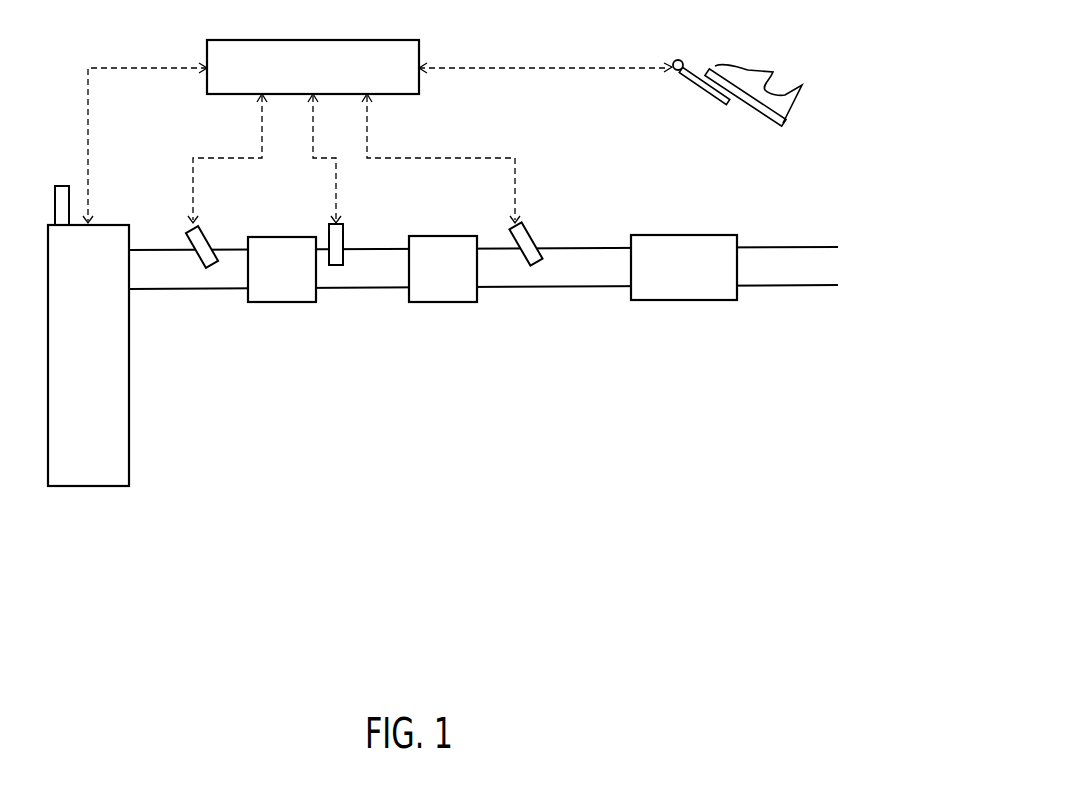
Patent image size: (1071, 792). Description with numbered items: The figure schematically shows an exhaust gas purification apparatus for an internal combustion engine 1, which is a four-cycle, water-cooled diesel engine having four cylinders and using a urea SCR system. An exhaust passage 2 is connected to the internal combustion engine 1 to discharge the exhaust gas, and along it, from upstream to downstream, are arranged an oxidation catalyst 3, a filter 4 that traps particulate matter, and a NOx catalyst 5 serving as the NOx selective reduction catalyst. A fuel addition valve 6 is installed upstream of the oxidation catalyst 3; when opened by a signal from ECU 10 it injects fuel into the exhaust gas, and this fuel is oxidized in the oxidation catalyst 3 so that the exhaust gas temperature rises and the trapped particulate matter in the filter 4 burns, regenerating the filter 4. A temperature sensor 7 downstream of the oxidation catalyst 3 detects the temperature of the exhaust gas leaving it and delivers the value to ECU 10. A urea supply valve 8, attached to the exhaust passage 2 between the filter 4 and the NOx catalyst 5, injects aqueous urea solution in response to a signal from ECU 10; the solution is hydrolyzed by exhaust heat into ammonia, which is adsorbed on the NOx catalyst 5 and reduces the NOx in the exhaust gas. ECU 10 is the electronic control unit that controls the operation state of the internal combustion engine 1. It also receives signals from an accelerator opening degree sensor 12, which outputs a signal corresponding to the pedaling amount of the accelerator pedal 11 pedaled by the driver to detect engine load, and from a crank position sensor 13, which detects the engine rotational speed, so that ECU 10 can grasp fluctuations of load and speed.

The internal combustion engine 1 is at (129, 429).
The exhaust passage 2 is at (352, 289).
The oxidation catalyst 3 is at (287, 302).
The filter 4 is at (448, 302).
The NOx catalyst 5 is at (690, 300).
The fuel addition valve 6 is at (215, 227).
The temperature sensor 7 is at (344, 228).
The urea supply valve 8 is at (525, 224).
The ECU 10 is at (207, 95).
The accelerator pedal 11 is at (747, 107).
The accelerator opening degree sensor 12 is at (673, 73).
The crank position sensor 13 is at (55, 205).